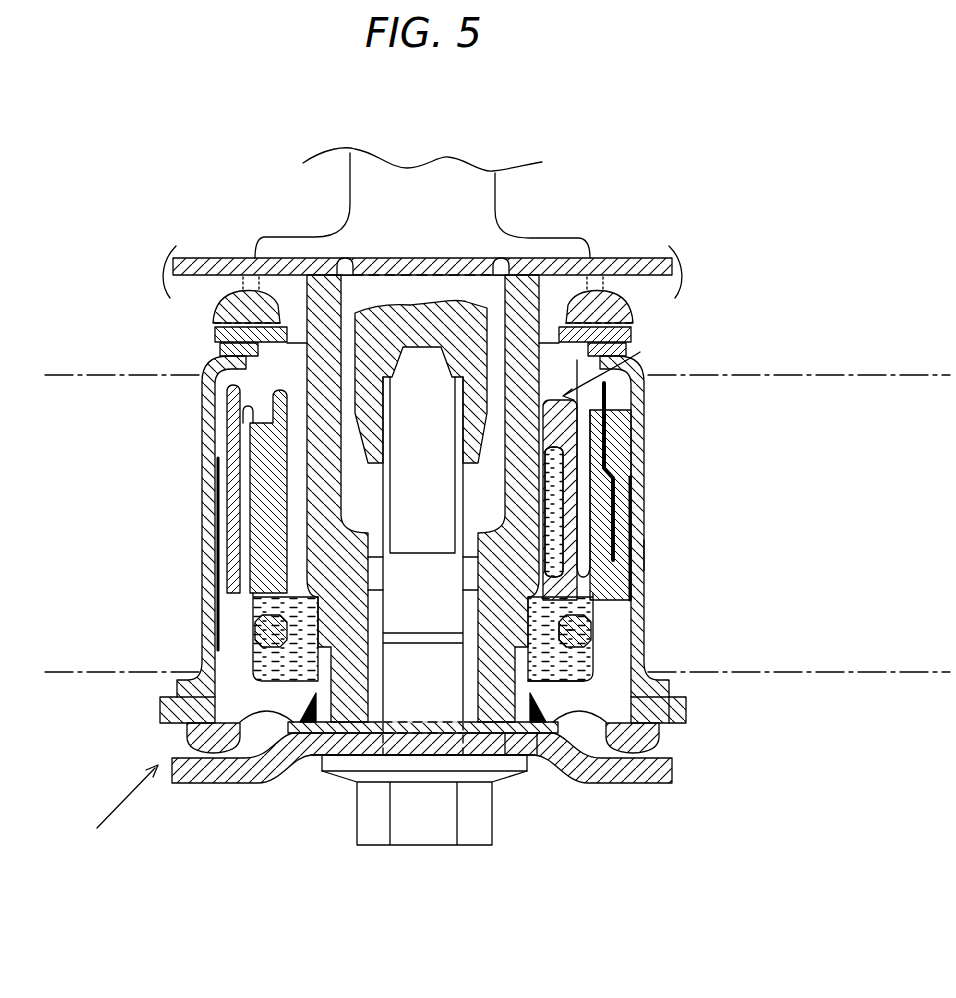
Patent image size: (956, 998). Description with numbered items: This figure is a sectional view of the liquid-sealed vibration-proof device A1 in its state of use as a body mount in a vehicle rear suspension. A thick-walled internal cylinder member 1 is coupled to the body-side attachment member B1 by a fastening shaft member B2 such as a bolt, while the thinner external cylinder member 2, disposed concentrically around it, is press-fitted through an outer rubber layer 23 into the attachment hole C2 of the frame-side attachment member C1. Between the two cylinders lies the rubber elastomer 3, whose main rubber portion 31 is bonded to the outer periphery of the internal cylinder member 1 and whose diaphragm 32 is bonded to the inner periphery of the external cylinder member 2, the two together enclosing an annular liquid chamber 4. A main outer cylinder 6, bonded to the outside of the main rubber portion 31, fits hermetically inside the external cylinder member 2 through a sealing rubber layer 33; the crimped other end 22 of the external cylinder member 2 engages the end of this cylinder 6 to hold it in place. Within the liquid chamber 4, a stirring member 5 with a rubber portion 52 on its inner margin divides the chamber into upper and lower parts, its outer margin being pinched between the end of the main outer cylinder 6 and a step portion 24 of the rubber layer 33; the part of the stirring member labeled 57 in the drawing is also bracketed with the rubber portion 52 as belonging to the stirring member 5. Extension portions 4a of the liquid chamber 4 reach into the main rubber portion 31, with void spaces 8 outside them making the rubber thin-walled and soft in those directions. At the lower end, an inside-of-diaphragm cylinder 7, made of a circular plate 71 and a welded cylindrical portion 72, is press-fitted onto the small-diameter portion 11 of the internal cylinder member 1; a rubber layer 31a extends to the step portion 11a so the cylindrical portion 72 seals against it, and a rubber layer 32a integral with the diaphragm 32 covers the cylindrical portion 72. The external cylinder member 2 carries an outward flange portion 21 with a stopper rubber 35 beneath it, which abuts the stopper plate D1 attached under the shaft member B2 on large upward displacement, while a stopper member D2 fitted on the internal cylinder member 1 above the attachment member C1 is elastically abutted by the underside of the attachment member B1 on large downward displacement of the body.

The internal cylinder member 1 is at (323, 287).
The external cylinder member 2 is at (613, 442).
The rubber elastomer 3 is at (620, 358).
The liquid chamber 4 is at (305, 708).
The extension portions 4a is at (553, 483).
The stirring member 5 is at (770, 605).
The main outer cylinder 6 is at (643, 553).
The inside-of-diaphragm cylinder 7 is at (578, 900).
The void spaces 8 is at (583, 420).
The small-diameter portion 11 is at (333, 735).
The step portion 11a is at (585, 712).
The flange portion 21 is at (686, 718).
The other end 22 is at (215, 385).
The rubber layer 23 is at (232, 545).
The step portion 24 is at (248, 628).
The main rubber portion 31 is at (232, 450).
The rubber layer 31a is at (630, 592).
The diaphragm 32 is at (280, 725).
The rubber layer 32a is at (577, 752).
The sealing rubber layer 33 is at (613, 517).
The stopper rubber 35 is at (212, 740).
The rubber portion 52 is at (603, 612).
The orifice 57 is at (627, 652).
The circular plate 71 is at (537, 748).
The cylindrical portion 72 is at (505, 745).
The vibration-proof device A1 is at (88, 868).
The attachment member B1 is at (493, 237).
The shaft member B2 is at (424, 675).
The attachment member C1 is at (88, 663).
The attachment hole C2 is at (207, 500).
The stopper plate D1 is at (250, 770).
The stopper member D2 is at (205, 322).